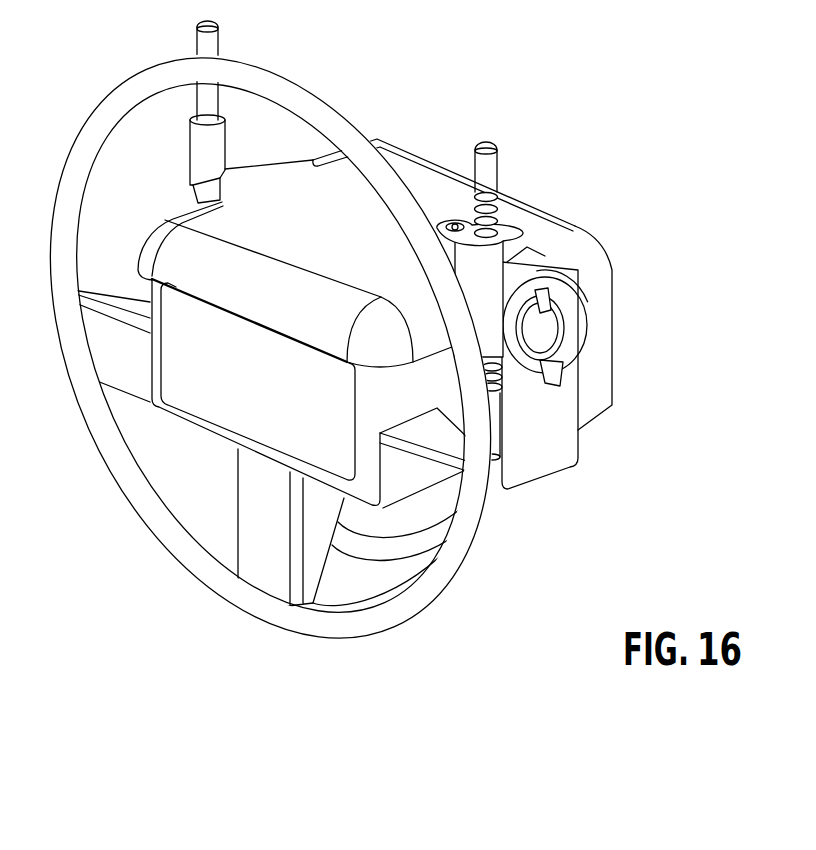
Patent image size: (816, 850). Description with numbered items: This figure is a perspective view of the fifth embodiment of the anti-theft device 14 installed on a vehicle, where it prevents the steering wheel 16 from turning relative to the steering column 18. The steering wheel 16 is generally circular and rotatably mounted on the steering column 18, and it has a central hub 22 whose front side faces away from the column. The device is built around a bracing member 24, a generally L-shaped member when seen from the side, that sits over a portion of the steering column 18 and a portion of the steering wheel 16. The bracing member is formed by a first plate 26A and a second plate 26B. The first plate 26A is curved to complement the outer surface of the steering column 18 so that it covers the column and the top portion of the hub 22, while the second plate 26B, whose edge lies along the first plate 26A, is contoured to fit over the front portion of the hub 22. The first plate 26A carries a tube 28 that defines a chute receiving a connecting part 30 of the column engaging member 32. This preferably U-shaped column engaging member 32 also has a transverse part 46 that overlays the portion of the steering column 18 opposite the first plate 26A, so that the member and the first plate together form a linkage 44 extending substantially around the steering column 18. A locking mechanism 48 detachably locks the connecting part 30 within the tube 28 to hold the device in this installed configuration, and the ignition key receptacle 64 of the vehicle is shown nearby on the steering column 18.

The anti-theft device 14 is at (423, 172).
The steering wheel 16 is at (465, 527).
The steering column 18 is at (595, 409).
The hub 22 is at (267, 397).
The bracing member 24 is at (553, 189).
The first plate 26A is at (376, 260).
The second plate 26B is at (284, 304).
The tube 28 is at (485, 268).
The connecting part 30 is at (213, 47).
The column engaging member 32 is at (358, 584).
The linkage 44 is at (285, 219).
The transverse part 46 is at (352, 545).
The locking mechanism 48 is at (456, 218).
The ignition key receptacle 64 is at (573, 353).